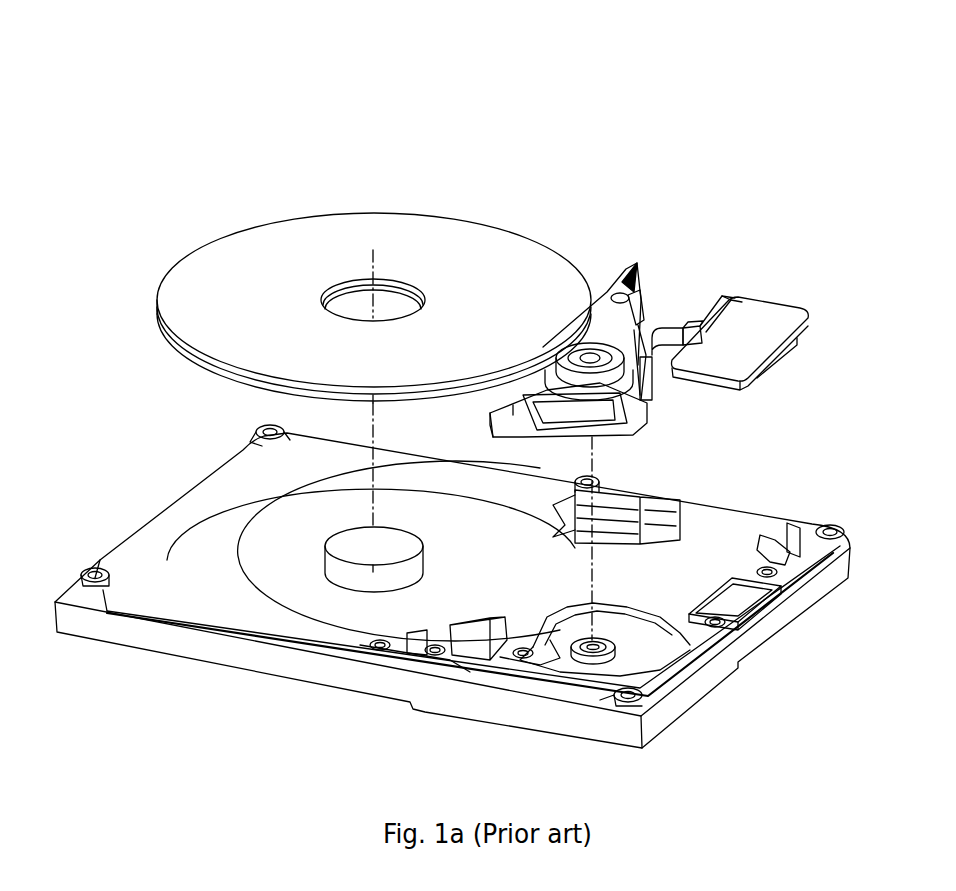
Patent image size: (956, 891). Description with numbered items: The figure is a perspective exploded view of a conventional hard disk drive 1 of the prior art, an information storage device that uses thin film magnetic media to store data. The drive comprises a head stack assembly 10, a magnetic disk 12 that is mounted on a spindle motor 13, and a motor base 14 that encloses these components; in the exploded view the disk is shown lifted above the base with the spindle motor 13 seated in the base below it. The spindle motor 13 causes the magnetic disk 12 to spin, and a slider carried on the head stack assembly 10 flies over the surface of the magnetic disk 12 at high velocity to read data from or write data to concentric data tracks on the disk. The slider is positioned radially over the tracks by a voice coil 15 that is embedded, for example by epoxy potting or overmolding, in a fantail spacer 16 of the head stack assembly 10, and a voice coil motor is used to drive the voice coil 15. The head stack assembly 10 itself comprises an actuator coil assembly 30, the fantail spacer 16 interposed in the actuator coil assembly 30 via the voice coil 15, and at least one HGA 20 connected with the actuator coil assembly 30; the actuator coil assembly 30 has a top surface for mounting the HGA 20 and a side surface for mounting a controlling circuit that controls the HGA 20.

The hard disk drive 1 is at (167, 52).
The head stack assembly 10 is at (649, 433).
The magnetic disk 12 is at (561, 272).
The spindle motor 13 is at (350, 545).
The motor base 14 is at (137, 556).
The voice coil 15 is at (598, 362).
The fantail spacer 16 is at (597, 427).
The head gimbal assembly 20 is at (643, 270).
The actuator coil assembly 30 is at (610, 333).